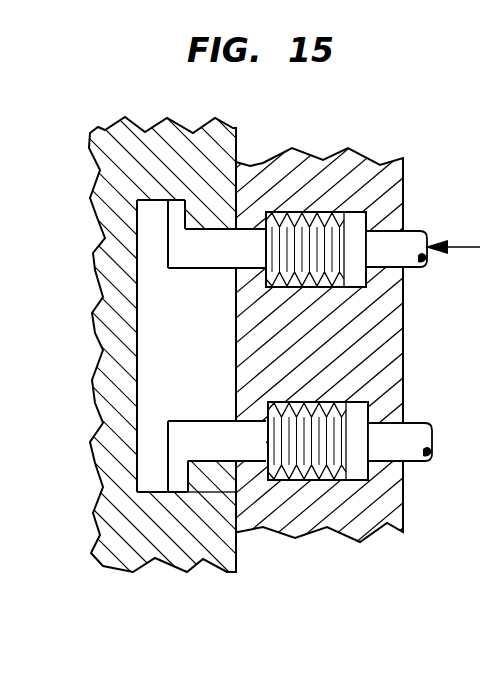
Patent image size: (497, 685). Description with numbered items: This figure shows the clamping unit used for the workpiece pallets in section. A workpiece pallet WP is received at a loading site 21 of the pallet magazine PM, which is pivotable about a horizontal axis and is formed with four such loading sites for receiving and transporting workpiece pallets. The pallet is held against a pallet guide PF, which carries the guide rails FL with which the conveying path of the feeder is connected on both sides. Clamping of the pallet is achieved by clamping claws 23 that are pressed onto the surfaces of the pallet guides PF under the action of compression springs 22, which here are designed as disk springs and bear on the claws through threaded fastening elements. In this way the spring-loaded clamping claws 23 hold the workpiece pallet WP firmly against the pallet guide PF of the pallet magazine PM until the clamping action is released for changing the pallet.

The loading site 21 is at (403, 172).
The compression spring 22 is at (316, 536).
The clamping claw 23 is at (193, 484).
The pallet guide PF is at (180, 463).
The guide rail FL is at (153, 453).
The workpiece pallet WP is at (130, 532).
The pallet magazine PM is at (368, 523).